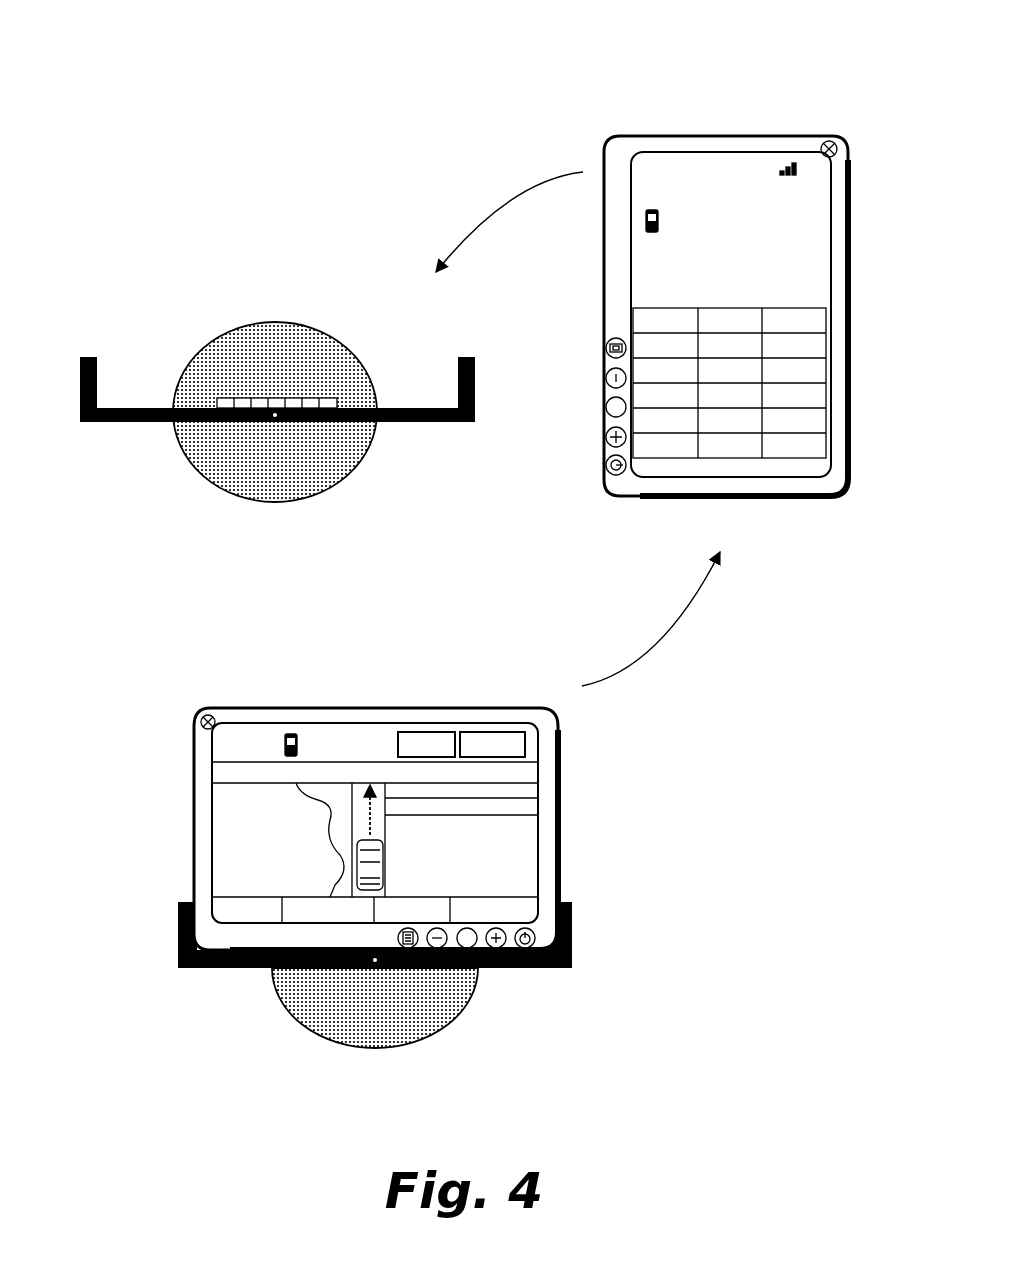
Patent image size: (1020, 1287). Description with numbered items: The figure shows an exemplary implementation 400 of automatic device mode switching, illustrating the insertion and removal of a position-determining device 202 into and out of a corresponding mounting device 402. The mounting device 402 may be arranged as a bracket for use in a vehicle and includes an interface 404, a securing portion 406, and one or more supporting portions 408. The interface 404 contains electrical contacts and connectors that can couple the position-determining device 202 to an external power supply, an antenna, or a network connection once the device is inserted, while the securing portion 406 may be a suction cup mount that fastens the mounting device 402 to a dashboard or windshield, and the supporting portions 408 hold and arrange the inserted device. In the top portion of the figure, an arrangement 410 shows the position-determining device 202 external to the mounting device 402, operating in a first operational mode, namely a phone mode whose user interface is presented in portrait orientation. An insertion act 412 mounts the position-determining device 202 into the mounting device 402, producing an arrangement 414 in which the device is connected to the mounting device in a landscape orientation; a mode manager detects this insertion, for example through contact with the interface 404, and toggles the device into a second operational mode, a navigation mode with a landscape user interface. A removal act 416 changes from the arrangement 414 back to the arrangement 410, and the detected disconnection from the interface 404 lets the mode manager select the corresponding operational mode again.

The exemplary implementation 400 is at (135, 65).
The mounting device 402 is at (167, 268).
The interface 404 is at (318, 398).
The securing portion 406 is at (274, 322).
The supporting portion 408 is at (100, 388).
The arrangement 410 is at (338, 168).
The insertion act 412 is at (509, 210).
The arrangement 414 is at (354, 630).
The removal act 416 is at (679, 619).
The position-determining device 202 is at (636, 133).